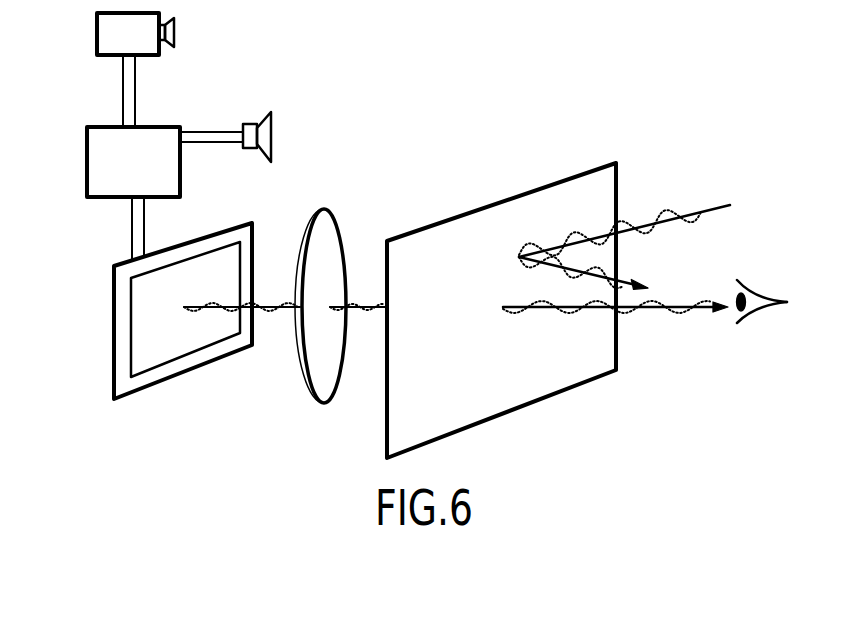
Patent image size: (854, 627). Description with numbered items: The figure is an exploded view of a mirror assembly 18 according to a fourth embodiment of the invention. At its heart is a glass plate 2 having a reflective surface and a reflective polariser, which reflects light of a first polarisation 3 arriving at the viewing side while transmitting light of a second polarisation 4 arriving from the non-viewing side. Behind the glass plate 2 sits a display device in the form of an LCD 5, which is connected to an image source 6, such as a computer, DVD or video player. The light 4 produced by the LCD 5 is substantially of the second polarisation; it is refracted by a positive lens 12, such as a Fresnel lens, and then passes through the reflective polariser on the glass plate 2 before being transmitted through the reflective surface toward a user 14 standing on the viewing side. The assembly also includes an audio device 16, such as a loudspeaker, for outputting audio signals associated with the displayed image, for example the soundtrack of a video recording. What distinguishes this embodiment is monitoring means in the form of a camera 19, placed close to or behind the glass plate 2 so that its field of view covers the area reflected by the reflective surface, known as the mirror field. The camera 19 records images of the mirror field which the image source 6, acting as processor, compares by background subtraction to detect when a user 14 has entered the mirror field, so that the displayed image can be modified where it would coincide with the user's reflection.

The camera 19 is at (107, 33).
The image source 6 is at (93, 162).
The audio device 16 is at (248, 125).
The LCD 5 is at (122, 296).
The positive lens 12 is at (323, 213).
The glass plate 2 is at (483, 215).
The light of a first polarisation 3 is at (712, 203).
The light of a second polarisation 4 is at (688, 310).
The user 14 is at (750, 316).
The mirror assembly 18 is at (695, 89).